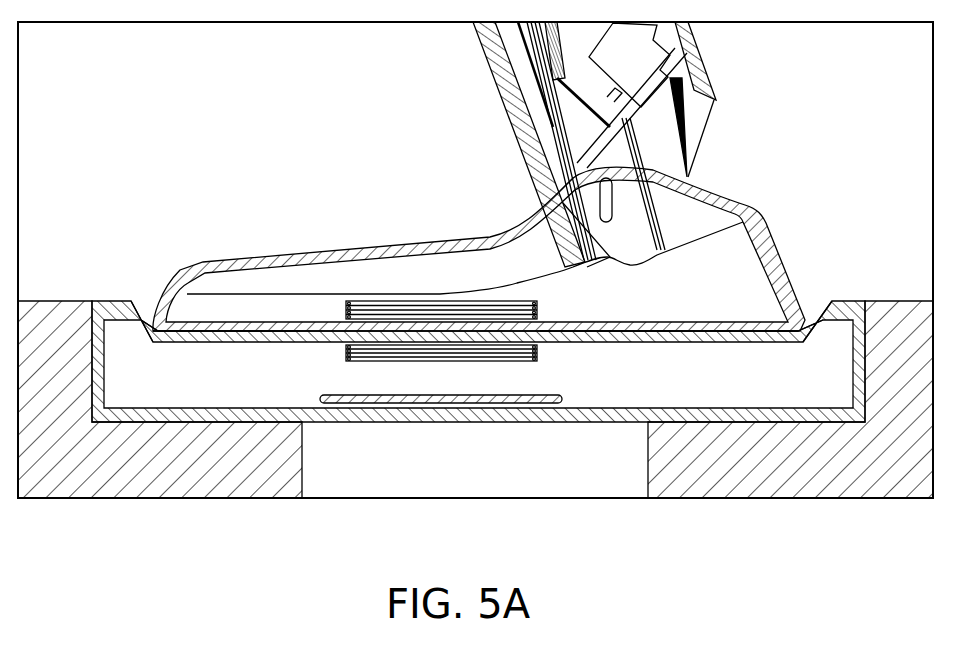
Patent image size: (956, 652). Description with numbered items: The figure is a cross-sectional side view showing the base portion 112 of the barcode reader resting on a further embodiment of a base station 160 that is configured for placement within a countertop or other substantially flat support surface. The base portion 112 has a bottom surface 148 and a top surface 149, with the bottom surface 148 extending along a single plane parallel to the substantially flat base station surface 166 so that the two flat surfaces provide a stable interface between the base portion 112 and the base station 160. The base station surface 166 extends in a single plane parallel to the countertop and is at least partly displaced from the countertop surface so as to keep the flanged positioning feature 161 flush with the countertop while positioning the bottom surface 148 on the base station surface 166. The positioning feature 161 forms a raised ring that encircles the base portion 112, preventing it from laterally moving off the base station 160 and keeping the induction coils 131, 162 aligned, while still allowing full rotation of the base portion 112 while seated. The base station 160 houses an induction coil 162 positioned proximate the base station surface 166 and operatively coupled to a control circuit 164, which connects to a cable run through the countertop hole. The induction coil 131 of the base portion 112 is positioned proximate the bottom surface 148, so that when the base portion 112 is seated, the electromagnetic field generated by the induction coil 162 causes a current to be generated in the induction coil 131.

The base portion 112 is at (723, 188).
The induction coil 131 is at (438, 302).
The bottom surface 148 is at (222, 357).
The top surface 149 is at (325, 257).
The base station 160 is at (813, 387).
The flanged positioning feature 161 is at (122, 338).
The induction coil 162 is at (528, 362).
The control circuit 164 is at (327, 404).
The base station surface 166 is at (673, 322).